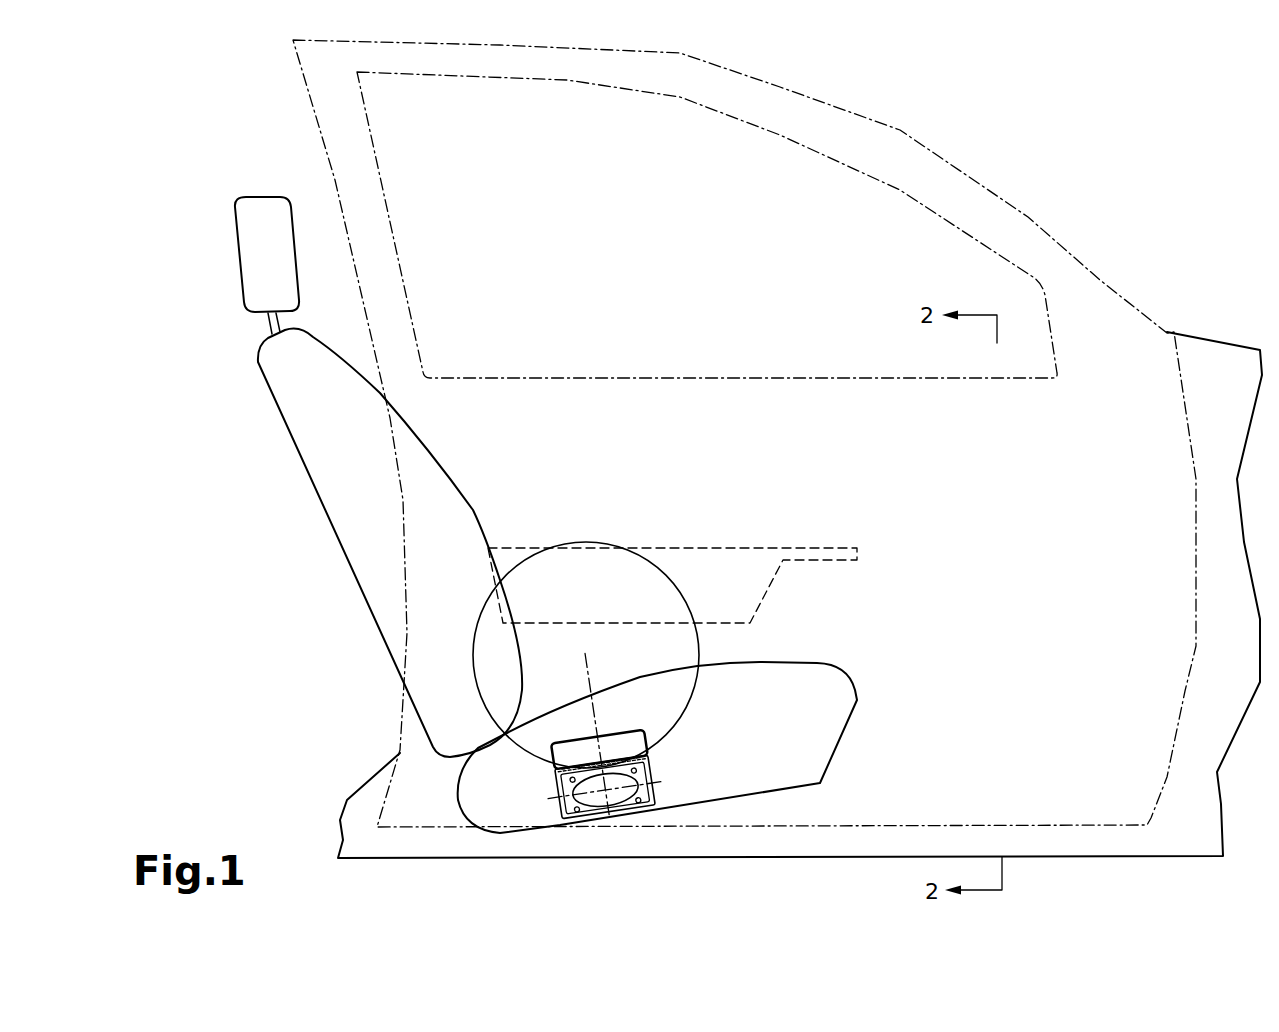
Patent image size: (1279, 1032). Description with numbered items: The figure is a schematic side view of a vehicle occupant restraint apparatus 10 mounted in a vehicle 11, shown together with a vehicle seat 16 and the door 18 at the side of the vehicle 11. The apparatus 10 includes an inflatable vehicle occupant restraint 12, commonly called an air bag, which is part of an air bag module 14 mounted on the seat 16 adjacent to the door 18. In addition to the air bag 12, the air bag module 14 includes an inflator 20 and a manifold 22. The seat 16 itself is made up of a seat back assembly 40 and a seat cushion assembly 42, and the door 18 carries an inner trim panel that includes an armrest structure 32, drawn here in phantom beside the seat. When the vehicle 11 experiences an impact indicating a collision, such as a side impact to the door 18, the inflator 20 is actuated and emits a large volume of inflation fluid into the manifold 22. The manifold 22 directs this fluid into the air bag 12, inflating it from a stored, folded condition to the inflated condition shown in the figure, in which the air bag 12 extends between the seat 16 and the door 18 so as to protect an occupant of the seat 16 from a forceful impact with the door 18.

The vehicle occupant restraint apparatus 10 is at (768, 637).
The vehicle 11 is at (1034, 208).
The inflatable vehicle occupant restraint 12 is at (670, 580).
The air bag module 14 is at (672, 792).
The vehicle seat 16 is at (300, 481).
The door 18 is at (396, 643).
The inflator 20 is at (620, 797).
The manifold 22 is at (557, 808).
The armrest structure 32 is at (822, 547).
The seat back assembly 40 is at (360, 533).
The seat cushion assembly 42 is at (833, 700).